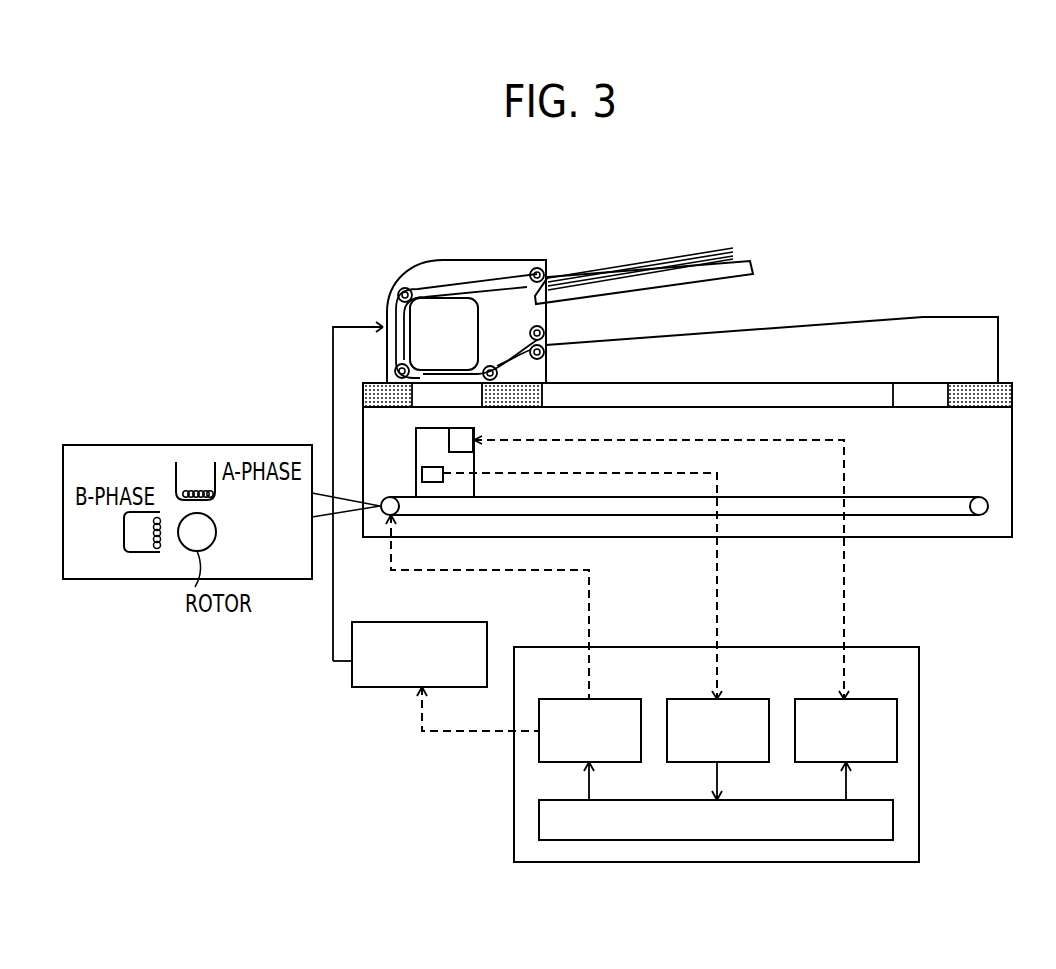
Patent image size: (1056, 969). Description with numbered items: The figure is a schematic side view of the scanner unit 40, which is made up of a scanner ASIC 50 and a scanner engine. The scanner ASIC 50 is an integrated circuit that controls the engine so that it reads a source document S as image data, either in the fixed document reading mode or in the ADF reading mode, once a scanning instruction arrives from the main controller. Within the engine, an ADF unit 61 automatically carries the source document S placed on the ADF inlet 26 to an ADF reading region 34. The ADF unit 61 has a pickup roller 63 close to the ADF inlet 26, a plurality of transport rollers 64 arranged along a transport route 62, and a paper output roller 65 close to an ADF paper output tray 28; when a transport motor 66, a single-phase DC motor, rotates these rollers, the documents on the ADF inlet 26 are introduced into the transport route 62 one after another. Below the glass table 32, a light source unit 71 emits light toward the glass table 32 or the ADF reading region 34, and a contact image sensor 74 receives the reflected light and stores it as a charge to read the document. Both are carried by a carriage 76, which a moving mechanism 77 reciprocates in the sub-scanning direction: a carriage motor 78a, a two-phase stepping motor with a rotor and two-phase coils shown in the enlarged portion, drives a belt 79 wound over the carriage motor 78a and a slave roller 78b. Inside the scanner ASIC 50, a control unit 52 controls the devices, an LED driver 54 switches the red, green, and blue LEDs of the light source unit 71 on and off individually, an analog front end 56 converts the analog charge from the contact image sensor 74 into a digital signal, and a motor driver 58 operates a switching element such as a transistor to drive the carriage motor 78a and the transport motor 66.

The scanner unit 40 is at (846, 211).
The ADF inlet 26 is at (753, 262).
The document S is at (655, 252).
The ADF paper output tray 28 is at (764, 327).
The glass table 32 is at (715, 388).
The ADF reading region 34 is at (443, 397).
The ADF unit 61 is at (447, 268).
The transport route 62 is at (432, 292).
The pickup roller 63 is at (541, 273).
The transport rollers 64 is at (398, 295).
The paper output roller 65 is at (545, 328).
The transport motor 66 is at (450, 621).
The light source unit 71 is at (475, 428).
The contact image sensor (CIS) 74 is at (422, 467).
The carriage 76 is at (475, 457).
The carriage moving unit 77 is at (893, 485).
The carriage motor 78a is at (385, 522).
The slave roller 78b is at (980, 516).
The belt 79 is at (731, 497).
The scanner ASIC 50 is at (919, 714).
The control unit 52 is at (893, 820).
The LED driver 54 is at (838, 699).
The analog front end (AFE) 56 is at (710, 699).
The motor driver 58 is at (578, 699).